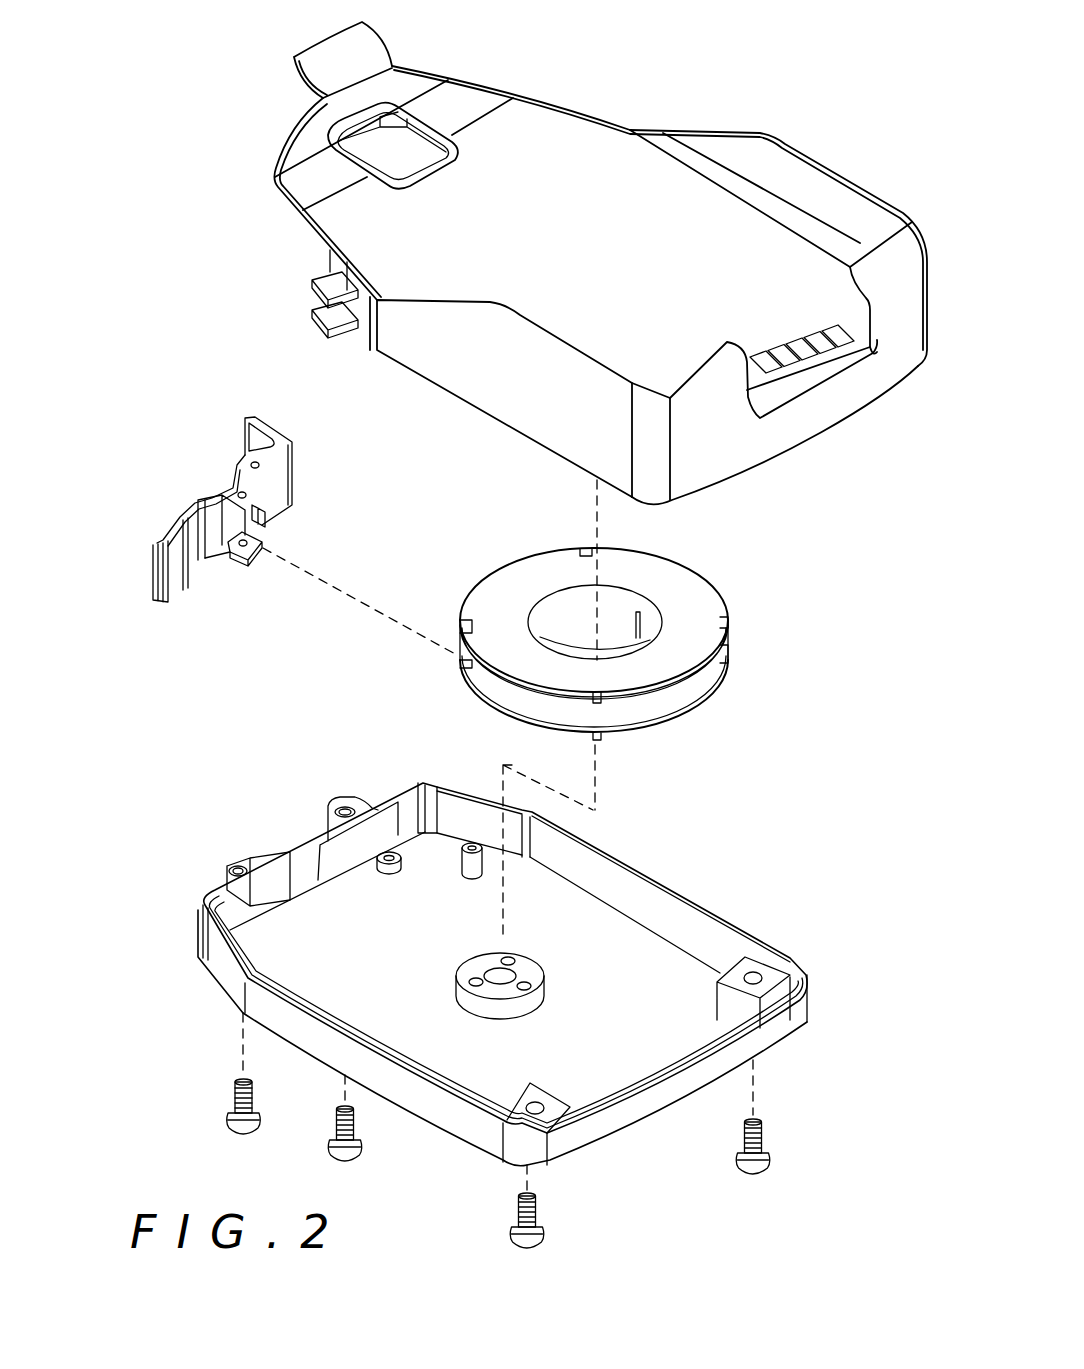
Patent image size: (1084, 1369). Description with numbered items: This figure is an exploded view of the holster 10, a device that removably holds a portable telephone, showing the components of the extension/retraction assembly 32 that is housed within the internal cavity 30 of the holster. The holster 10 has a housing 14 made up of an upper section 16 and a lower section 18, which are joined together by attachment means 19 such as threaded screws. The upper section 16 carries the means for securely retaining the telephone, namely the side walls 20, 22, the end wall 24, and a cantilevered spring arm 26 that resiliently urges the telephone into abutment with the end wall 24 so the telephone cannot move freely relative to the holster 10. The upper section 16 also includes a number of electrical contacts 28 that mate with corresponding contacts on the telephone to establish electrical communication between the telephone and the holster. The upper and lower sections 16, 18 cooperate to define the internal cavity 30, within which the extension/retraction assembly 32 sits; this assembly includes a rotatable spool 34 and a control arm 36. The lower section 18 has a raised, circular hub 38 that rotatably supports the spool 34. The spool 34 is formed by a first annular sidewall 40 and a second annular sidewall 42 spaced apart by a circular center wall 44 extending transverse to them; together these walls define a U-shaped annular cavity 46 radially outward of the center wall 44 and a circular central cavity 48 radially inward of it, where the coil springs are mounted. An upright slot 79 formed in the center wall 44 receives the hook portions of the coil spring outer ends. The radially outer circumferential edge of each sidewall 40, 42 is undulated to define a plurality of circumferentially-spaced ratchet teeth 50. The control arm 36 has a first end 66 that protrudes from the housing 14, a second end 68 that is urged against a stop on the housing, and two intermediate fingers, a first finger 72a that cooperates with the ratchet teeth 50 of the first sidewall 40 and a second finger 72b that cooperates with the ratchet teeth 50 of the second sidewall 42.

The holster 10 is at (222, 360).
The housing 14 is at (810, 647).
The upper section 16 is at (552, 128).
The lower section 18 is at (690, 921).
The attachment means 19 is at (766, 1135).
The side wall 20 is at (828, 195).
The side wall 22 is at (498, 403).
The end wall 24 is at (903, 253).
The cantilevered spring arm 26 is at (342, 44).
The electrical contacts 28 is at (808, 337).
The internal cavity 30 is at (333, 957).
The extension/retraction assembly 32 is at (350, 696).
The rotatable spool 34 is at (706, 562).
The control arm 36 is at (200, 496).
The raised circular hub 38 is at (560, 991).
The first annular sidewall 40 is at (498, 582).
The second annular sidewall 42 is at (492, 694).
The circular center wall 44 is at (537, 622).
The U-shaped annular cavity 46 is at (661, 712).
The circular central cavity 48 is at (578, 610).
The ratchet teeth 50 is at (580, 553).
The first end 66 is at (278, 414).
The second end 68 is at (153, 565).
The first finger 72a is at (270, 522).
The second finger 72b is at (238, 563).
The upright slot 79 is at (632, 616).